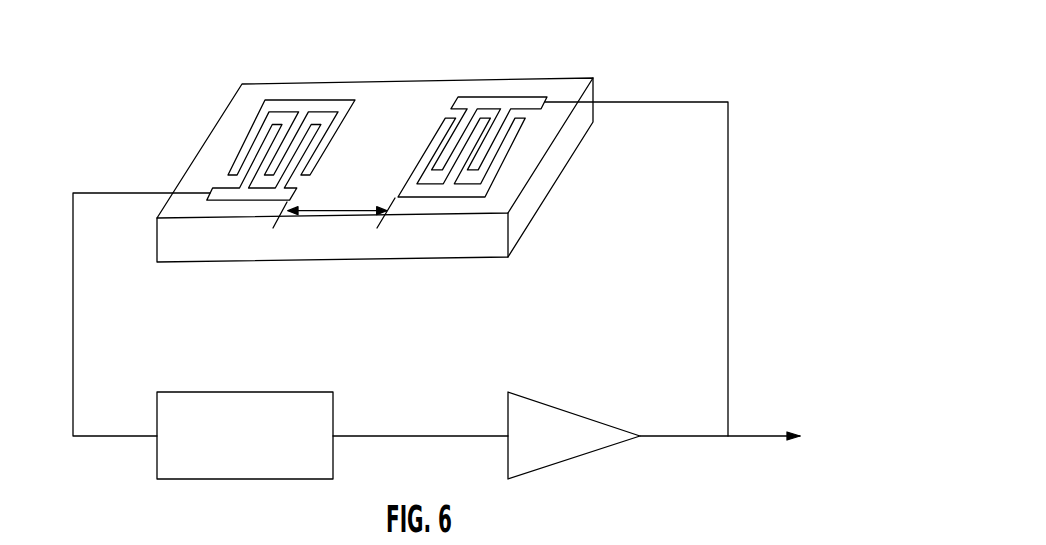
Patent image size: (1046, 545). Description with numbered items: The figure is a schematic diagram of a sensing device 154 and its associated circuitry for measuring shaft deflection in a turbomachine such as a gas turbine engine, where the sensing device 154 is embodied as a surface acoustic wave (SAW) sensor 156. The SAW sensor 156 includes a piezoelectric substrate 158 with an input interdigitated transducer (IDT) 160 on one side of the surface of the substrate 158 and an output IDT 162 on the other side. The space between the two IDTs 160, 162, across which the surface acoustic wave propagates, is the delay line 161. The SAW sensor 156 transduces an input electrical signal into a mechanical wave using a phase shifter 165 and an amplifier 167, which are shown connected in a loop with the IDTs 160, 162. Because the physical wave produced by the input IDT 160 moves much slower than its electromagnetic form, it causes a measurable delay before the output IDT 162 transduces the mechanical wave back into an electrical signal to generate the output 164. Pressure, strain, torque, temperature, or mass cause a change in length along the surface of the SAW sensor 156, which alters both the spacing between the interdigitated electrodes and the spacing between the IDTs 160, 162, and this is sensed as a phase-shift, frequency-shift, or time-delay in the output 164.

The sensing device 154 is at (437, 157).
The surface acoustic wave (SAW) sensor 156 is at (437, 157).
The piezoelectric substrate 158 is at (540, 181).
The input interdigitated transducer (IDT) 160 is at (298, 97).
The delay line 161 is at (358, 211).
The output interdigitated transducer (IDT) 162 is at (513, 95).
The output 164 is at (850, 451).
The phase shifter 165 is at (263, 447).
The amplifier 167 is at (563, 447).